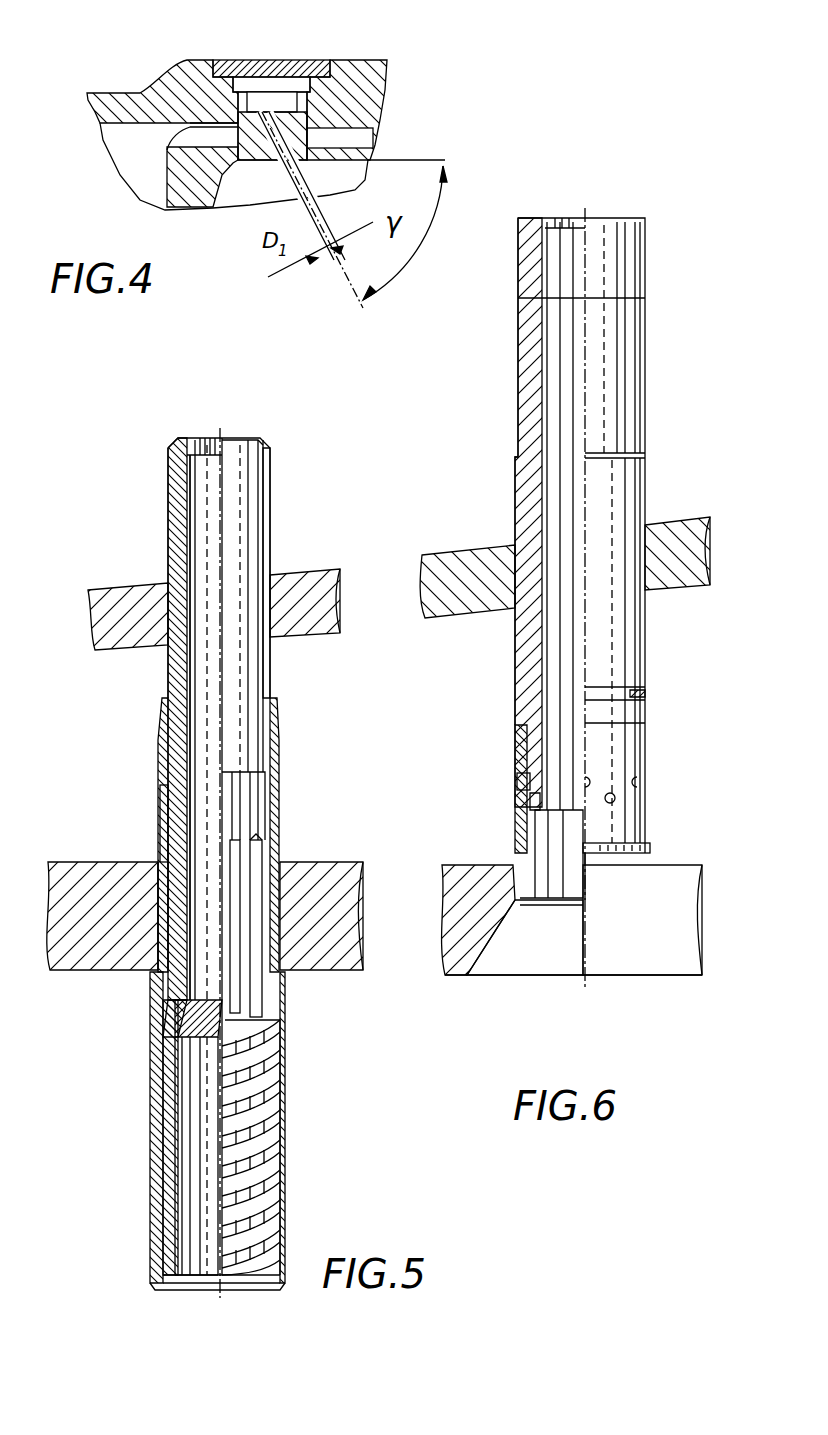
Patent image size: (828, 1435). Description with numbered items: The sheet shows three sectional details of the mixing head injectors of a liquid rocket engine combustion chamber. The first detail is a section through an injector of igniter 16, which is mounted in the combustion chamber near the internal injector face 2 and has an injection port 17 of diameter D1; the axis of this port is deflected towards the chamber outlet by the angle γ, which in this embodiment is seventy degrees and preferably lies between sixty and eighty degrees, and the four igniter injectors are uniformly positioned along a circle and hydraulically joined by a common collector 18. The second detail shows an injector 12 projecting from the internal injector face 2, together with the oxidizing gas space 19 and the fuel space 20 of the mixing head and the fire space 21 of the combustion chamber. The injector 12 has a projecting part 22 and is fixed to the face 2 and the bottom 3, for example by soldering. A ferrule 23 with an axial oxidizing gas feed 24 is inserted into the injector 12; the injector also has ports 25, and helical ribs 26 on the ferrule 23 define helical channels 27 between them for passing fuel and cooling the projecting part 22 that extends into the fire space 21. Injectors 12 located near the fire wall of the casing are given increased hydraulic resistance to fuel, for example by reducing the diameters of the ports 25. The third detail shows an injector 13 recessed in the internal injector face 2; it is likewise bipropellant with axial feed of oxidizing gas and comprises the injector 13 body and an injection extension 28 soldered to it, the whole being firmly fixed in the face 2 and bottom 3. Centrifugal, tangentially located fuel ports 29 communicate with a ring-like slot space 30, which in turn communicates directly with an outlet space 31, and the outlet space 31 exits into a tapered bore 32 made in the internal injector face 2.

In FIG. 5, the internal injector face 2 is at (80, 888).
In FIG. 6, the internal injector face 2 is at (445, 888).
In FIG. 5, the bottom 3 is at (126, 595).
In FIG. 6, the bottom 3 is at (672, 532).
In FIG. 5, the injector 12 is at (165, 850).
In FIG. 6, the injector 13 is at (526, 510).
In FIG. 4, the injector of igniter 16 is at (297, 130).
In FIG. 5, the injector of igniter 16 is at (165, 1050).
In FIG. 4, the injection port 17 is at (253, 160).
In FIG. 4, the common collector 18 is at (264, 60).
In FIG. 5, the oxidizing gas space 19 is at (193, 405).
In FIG. 6, the oxidizing gas space 19 is at (654, 325).
In FIG. 5, the fuel space 20 is at (136, 720).
In FIG. 6, the fuel space 20 is at (652, 656).
In FIG. 5, the fire space 21 is at (135, 1242).
In FIG. 6, the fire space 21 is at (580, 1018).
In FIG. 5, the projecting part 22 is at (152, 1152).
In FIG. 5, the ferrule 23 is at (245, 540).
In FIG. 6, the ferrule 23 is at (592, 514).
In FIG. 5, the axial oxidizing gas feed 24 is at (205, 500).
In FIG. 5, the ports 25 is at (160, 790).
In FIG. 5, the helical ribs 26 is at (255, 1065).
In FIG. 5, the helical channels 27 is at (278, 1105).
In FIG. 6, the injection extension 28 is at (520, 740).
In FIG. 6, the fuel ports 29 is at (518, 780).
In FIG. 6, the ring-like slot space 30 is at (532, 802).
In FIG. 6, the outlet space 31 is at (526, 852).
In FIG. 6, the tapered bore 32 is at (522, 975).